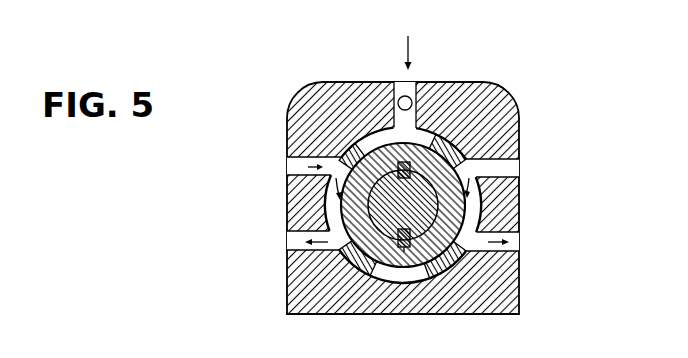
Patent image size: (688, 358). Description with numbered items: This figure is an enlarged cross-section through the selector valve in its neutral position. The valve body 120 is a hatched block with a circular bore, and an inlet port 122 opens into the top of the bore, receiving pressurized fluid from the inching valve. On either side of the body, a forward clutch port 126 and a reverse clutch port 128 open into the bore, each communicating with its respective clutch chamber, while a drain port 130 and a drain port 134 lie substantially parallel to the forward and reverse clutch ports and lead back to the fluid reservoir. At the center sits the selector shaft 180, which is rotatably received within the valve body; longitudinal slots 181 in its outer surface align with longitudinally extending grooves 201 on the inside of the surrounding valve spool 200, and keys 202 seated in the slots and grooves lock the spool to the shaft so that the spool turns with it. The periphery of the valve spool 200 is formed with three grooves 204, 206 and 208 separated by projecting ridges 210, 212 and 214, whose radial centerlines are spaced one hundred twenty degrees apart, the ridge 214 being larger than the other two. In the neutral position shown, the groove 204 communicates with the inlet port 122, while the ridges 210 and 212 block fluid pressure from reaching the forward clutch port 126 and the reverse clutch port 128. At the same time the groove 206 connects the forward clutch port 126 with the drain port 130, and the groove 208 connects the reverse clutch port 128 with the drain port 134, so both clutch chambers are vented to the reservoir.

The valve body 120 is at (496, 91).
The inlet port 122 is at (413, 82).
The forward clutch port 126 is at (478, 168).
The reverse clutch port 128 is at (297, 168).
The drain port 130 is at (521, 249).
The drain port 134 is at (296, 241).
The selector shaft 180 is at (418, 228).
The longitudinal slots 181 is at (466, 237).
The valve spool 200 is at (437, 143).
The longitudinally extending grooves 201 is at (401, 161).
The keys 202 is at (402, 250).
The groove 204 is at (440, 134).
The groove 206 is at (476, 197).
The groove 208 is at (338, 204).
The ridge 210 is at (346, 143).
The ridge 212 is at (470, 141).
The ridge 214 is at (406, 252).